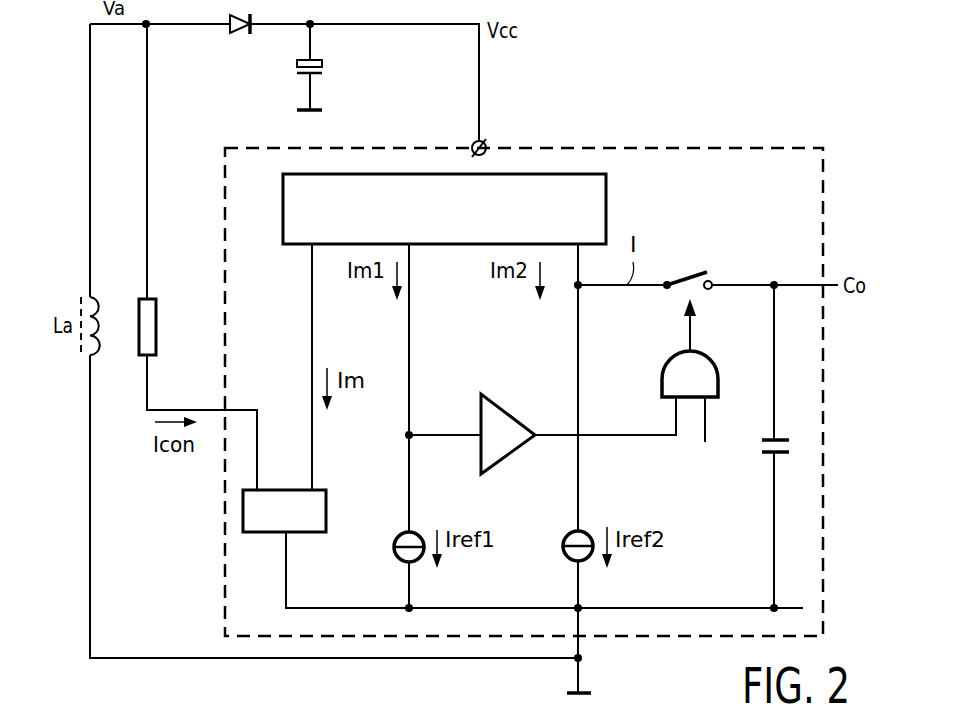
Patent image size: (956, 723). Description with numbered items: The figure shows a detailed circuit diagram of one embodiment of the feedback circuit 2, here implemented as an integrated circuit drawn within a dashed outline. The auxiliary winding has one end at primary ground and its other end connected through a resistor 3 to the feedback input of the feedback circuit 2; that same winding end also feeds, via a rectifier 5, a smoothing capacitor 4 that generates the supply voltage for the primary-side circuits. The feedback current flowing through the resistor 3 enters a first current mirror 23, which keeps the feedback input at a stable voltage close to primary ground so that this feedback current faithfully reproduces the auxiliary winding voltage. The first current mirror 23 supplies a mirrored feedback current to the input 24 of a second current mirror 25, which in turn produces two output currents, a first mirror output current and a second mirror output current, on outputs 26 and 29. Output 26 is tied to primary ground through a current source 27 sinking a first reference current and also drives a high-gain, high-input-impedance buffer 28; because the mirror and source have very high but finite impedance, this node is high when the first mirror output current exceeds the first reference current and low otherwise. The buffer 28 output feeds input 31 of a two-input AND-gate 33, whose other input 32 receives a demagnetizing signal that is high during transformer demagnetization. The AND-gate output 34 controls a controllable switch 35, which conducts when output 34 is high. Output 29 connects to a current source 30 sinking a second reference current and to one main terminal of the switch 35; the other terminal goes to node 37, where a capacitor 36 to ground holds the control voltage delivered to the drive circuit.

The feedback circuit 2 is at (727, 142).
The resistor 3 is at (139, 320).
The smoothing capacitor 4 is at (322, 64).
The rectifier 5 is at (236, 36).
The first current mirror 23 is at (254, 534).
The input of second current mirror 24 is at (310, 246).
The second current mirror 25 is at (606, 190).
The output of second current mirror 26 is at (415, 246).
The current source 27 is at (394, 552).
The buffer 28 is at (507, 412).
The output of second current mirror 29 is at (572, 246).
The current source 30 is at (563, 540).
The input of AND-gate 31 is at (676, 416).
The input of AND-gate 32 is at (708, 418).
The AND-gate 33 is at (662, 378).
The output of AND-gate 34 is at (688, 333).
The controllable switch 35 is at (687, 273).
The capacitor 36 is at (762, 446).
The node 37 is at (797, 284).